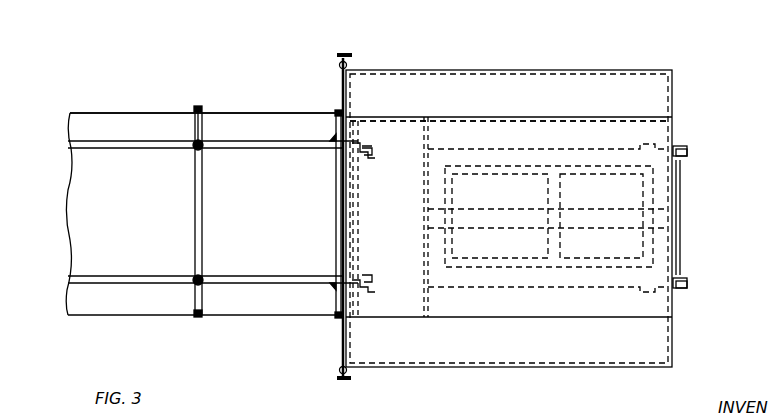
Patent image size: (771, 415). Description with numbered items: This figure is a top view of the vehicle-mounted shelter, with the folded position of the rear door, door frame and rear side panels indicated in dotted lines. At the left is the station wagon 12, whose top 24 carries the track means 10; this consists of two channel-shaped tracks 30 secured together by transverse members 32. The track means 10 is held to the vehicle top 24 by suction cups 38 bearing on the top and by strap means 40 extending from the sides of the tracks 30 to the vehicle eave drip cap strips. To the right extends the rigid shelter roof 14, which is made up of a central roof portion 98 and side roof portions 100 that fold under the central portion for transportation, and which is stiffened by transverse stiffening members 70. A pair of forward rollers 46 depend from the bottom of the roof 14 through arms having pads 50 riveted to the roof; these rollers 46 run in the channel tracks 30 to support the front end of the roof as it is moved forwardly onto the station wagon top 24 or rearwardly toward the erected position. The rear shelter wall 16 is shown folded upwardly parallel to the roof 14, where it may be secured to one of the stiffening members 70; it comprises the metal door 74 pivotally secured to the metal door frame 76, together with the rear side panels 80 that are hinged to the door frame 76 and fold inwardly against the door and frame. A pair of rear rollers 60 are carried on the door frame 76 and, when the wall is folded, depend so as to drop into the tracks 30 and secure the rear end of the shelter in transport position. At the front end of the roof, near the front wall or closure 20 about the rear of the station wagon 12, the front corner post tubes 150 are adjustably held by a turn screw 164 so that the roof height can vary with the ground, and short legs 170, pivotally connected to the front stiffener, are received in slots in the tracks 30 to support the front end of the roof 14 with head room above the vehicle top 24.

The track means 10 is at (85, 128).
The station wagon 12 is at (135, 113).
The shelter roof 14 is at (542, 130).
The rear shelter wall 16 is at (673, 93).
The front wall or closure 20 is at (342, 92).
The vehicle top 24 is at (134, 211).
The tracks 30 is at (257, 150).
The transverse members 32 is at (200, 222).
The suction cups 38 is at (203, 150).
The strap means 40 is at (200, 132).
The forward rollers 46 is at (365, 160).
The pads 50 is at (377, 137).
The rear rollers 60 is at (650, 140).
The roof transverse stiffening members 70 is at (427, 137).
The metal door 74 is at (681, 213).
The metal door frame 76 is at (533, 167).
The rear side panels 80 is at (482, 207).
The central roof portion 98 is at (398, 225).
The side roof portions 100 is at (513, 107).
The tubes or pipes 150 is at (347, 63).
The set or turn screw 164 is at (342, 54).
The short legs 170 is at (363, 133).